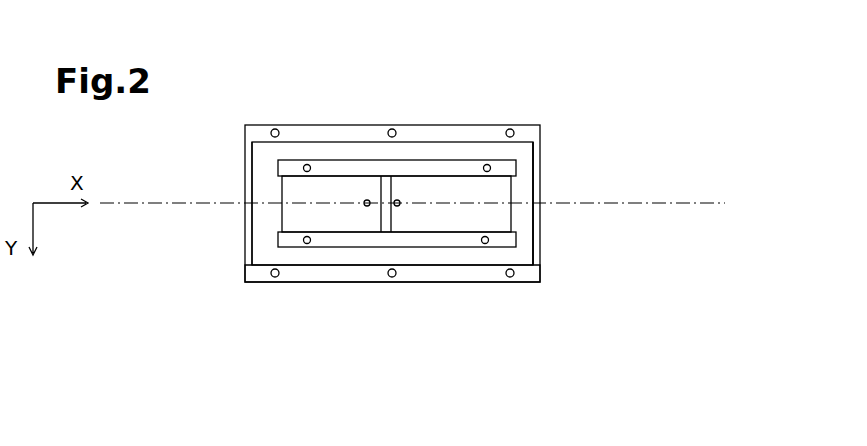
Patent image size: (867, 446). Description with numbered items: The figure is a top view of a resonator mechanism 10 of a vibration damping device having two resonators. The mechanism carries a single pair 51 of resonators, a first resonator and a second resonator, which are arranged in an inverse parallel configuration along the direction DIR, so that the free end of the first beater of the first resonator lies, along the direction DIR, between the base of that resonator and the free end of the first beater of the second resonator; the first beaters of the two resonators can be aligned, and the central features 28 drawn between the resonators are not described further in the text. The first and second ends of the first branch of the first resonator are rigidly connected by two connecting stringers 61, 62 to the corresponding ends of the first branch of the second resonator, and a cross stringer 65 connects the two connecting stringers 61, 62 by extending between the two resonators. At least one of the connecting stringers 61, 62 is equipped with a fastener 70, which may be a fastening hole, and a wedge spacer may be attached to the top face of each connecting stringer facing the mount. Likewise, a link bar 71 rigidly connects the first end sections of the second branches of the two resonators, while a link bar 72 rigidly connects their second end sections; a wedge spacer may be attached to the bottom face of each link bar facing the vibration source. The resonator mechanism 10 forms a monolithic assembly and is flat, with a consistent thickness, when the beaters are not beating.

The resonator mechanism 10 is at (640, 232).
The pivot pins 28 is at (396, 206).
The pair of resonators 51 is at (246, 178).
The connecting stringer 61 is at (432, 168).
The connecting stringer 62 is at (424, 247).
The cross stringer 65 is at (410, 191).
The fastener 70 is at (307, 165).
The link bar 71 is at (353, 160).
The link bar 72 is at (536, 275).
The direction DIR is at (665, 202).